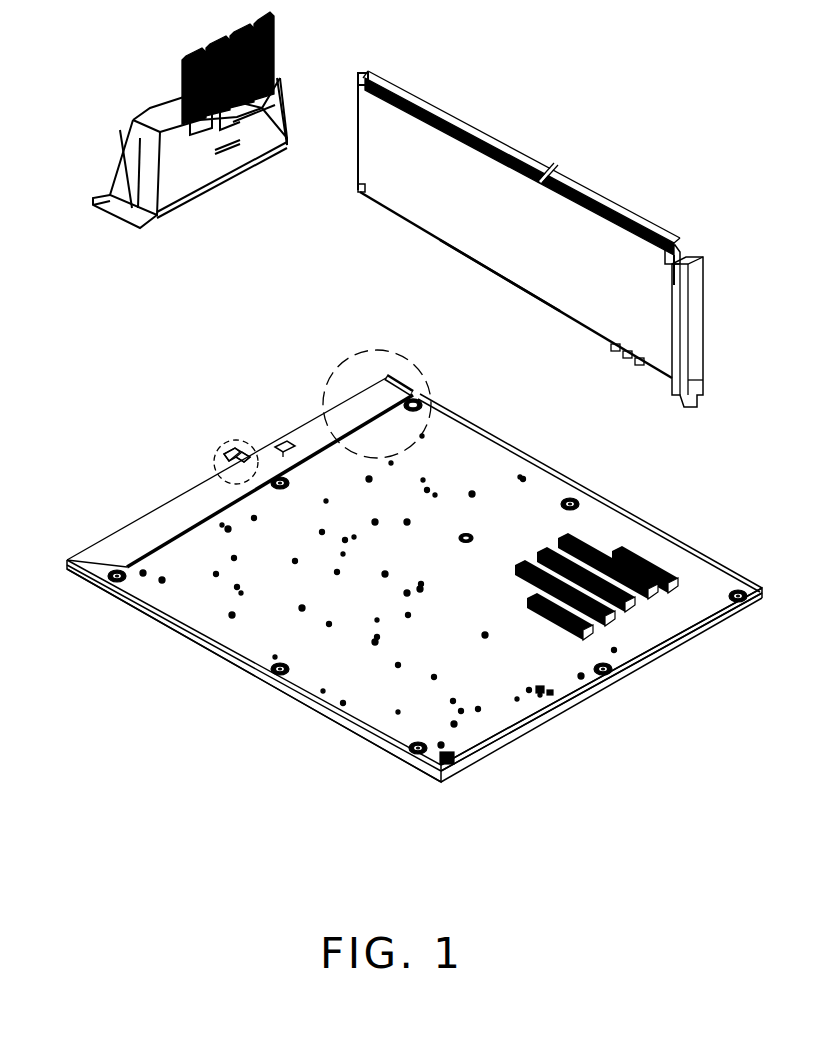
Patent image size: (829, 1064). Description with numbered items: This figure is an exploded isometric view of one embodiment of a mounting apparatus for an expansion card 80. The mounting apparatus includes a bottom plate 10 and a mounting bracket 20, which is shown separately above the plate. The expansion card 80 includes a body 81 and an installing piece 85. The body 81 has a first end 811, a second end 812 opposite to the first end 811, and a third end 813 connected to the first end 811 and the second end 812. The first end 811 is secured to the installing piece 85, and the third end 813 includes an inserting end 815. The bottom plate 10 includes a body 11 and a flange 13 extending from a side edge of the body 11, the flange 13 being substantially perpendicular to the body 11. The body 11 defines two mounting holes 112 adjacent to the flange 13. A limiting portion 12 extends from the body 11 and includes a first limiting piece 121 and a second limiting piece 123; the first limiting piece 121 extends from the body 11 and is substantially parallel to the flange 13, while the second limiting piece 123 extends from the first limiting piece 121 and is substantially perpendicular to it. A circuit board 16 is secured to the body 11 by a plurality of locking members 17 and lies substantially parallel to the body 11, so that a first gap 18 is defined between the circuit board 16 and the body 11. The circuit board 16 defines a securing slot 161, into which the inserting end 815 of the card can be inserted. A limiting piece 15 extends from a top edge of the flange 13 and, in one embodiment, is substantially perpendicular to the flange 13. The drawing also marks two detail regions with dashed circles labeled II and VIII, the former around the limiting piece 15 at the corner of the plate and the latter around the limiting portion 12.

The bottom plate 10 is at (265, 690).
The body 11 is at (150, 535).
The limiting portion 12 is at (204, 394).
The first limiting piece 121 is at (228, 456).
The second limiting piece 123 is at (243, 450).
The flange 13 is at (418, 395).
The limiting piece 15 is at (396, 380).
The circuit board 16 is at (505, 712).
The securing slot 161 is at (650, 545).
The locking members 17 is at (200, 500).
The first gap 18 is at (620, 680).
The mounting holes 112 is at (283, 445).
The mounting bracket 20 is at (164, 113).
The expansion card 80 is at (543, 210).
The body 81 is at (592, 232).
The first end 811 is at (683, 250).
The second end 812 is at (358, 80).
The third end 813 is at (490, 268).
The inserting end 815 is at (622, 360).
The installing piece 85 is at (690, 326).
The detail circle II is at (345, 355).
The detail circle VIII is at (213, 470).